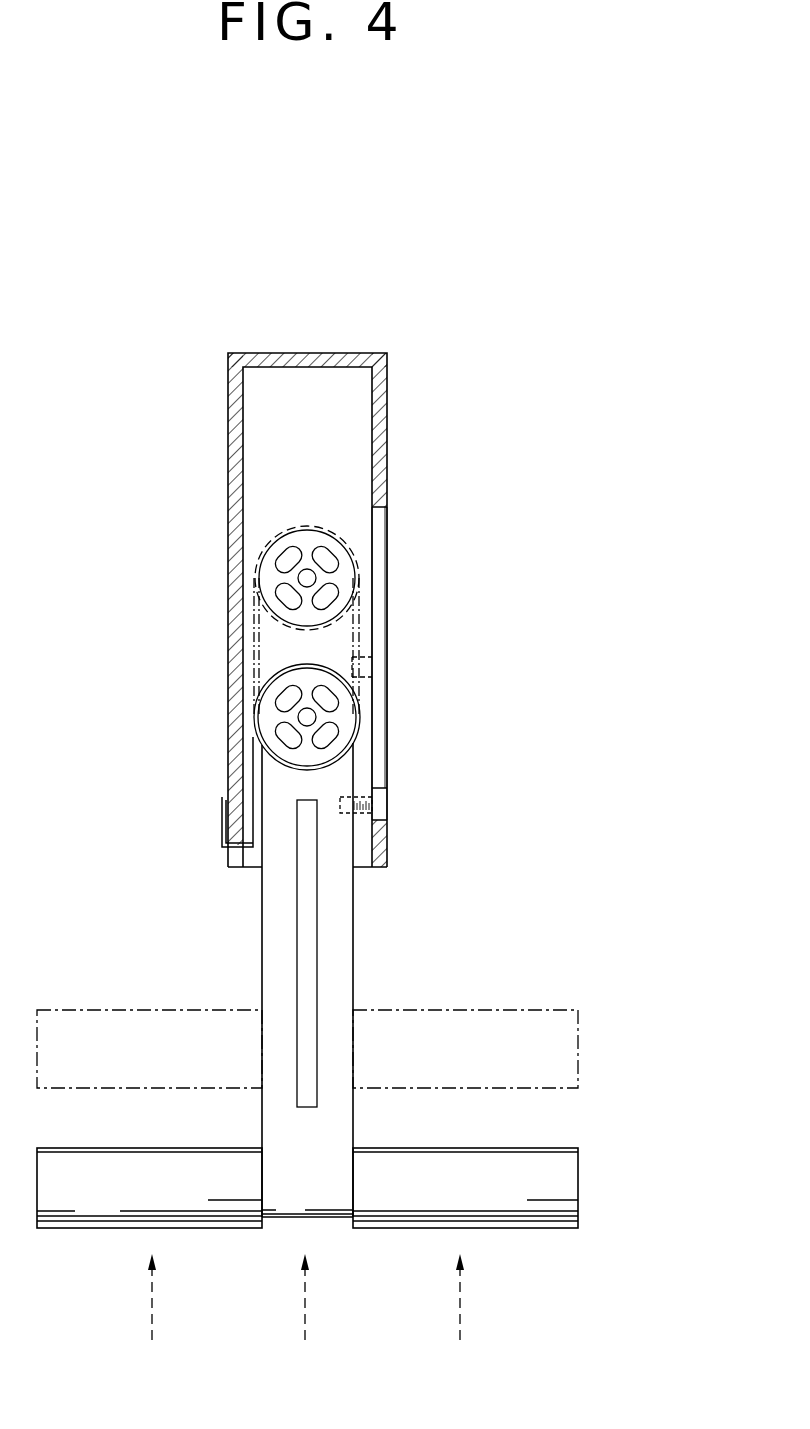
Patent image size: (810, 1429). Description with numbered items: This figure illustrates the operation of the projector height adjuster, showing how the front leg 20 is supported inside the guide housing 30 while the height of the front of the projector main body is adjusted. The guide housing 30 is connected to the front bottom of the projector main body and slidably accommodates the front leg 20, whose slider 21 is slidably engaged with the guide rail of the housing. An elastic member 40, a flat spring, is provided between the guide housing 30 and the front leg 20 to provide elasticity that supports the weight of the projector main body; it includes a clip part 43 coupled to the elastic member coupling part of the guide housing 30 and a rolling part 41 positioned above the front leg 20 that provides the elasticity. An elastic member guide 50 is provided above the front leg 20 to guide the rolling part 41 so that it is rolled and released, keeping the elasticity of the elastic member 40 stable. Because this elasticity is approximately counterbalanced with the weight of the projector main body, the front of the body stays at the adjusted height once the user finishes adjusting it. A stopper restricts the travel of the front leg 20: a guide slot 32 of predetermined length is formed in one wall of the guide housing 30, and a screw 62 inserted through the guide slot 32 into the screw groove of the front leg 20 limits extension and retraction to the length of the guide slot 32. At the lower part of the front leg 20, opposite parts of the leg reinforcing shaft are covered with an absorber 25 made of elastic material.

The front leg 20 is at (369, 980).
The slider 21 is at (315, 890).
The absorber 25 is at (93, 1230).
The guide housing 30 is at (393, 349).
The guide slot 32 is at (382, 525).
The elastic member 40 is at (218, 712).
The rolling part 41 is at (258, 725).
The clip part 43 is at (124, 730).
The elastic member guide 50 is at (368, 705).
The screw 62 is at (386, 807).